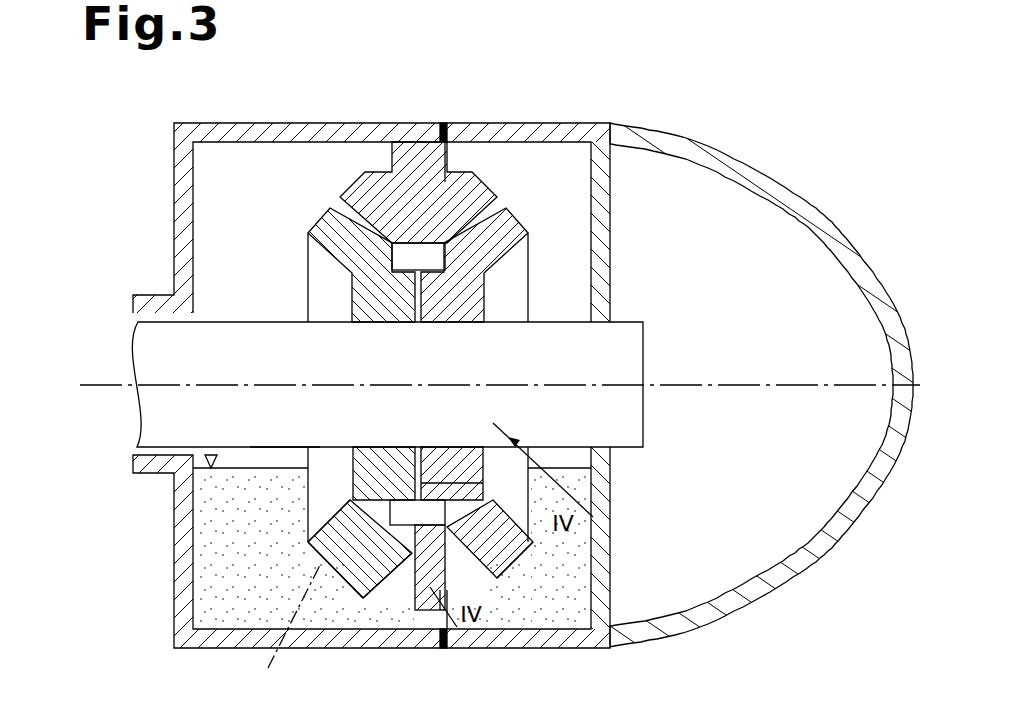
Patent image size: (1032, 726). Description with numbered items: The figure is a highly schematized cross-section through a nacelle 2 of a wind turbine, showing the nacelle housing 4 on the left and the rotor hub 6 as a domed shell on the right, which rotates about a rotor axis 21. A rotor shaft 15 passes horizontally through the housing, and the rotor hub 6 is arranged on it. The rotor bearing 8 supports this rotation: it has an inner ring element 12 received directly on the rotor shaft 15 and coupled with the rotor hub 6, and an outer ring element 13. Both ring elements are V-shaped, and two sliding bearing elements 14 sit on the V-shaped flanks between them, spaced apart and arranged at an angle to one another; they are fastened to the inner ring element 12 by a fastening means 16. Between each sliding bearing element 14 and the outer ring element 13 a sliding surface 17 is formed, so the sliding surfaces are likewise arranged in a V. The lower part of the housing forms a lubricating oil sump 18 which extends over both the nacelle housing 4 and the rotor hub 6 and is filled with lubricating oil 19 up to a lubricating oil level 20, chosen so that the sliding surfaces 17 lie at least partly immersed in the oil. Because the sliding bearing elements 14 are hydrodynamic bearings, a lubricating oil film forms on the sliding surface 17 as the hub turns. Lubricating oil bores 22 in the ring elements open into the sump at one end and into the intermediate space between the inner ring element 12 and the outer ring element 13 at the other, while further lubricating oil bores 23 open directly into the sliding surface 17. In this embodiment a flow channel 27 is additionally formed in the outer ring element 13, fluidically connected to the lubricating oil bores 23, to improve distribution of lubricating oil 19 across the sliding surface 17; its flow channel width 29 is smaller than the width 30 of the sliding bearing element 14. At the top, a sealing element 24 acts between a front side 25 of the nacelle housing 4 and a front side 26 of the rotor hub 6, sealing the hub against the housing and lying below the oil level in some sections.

The nacelle 2 is at (504, 353).
The nacelle housing 4 is at (180, 640).
The rotor hub 6 is at (775, 582).
The rotor bearing 8 is at (298, 505).
The inner ring element 12 is at (385, 540).
The outer ring element 13 is at (348, 600).
The sliding bearing element 14 is at (355, 518).
The rotor shaft 15 is at (157, 352).
The fastening means 16 is at (288, 630).
The sliding surface 17 is at (366, 600).
The lubricating oil sump 18 is at (283, 440).
The lubricating oil 19 is at (215, 548).
The lubricating oil level 20 is at (257, 468).
The rotor axis 21 is at (826, 382).
The lubricating oil bore 22 is at (452, 470).
The lubricating oil bore 23 is at (400, 592).
The sealing element 24 is at (447, 123).
The front side of the nacelle housing 25 is at (456, 146).
The front side of the rotor hub 26 is at (440, 122).
The flow channel 27 is at (395, 520).
The flow channel width 29 is at (560, 470).
The width of the sliding bearing element 30 is at (325, 522).